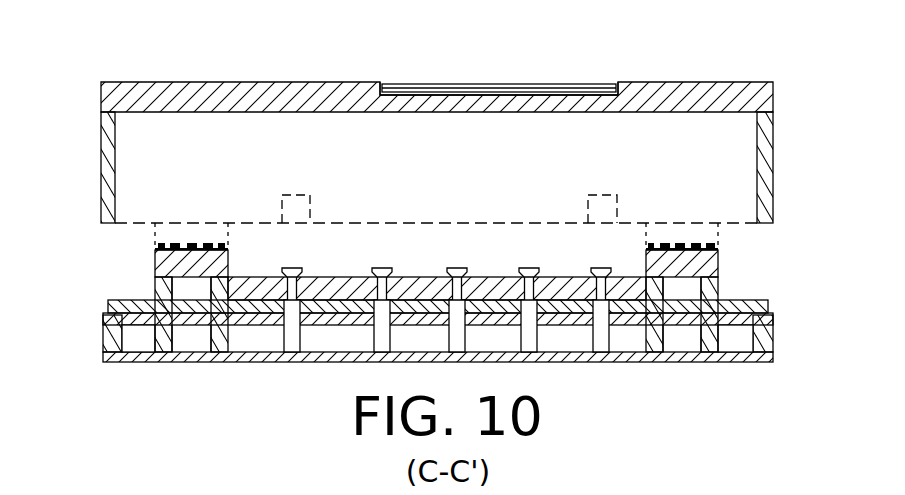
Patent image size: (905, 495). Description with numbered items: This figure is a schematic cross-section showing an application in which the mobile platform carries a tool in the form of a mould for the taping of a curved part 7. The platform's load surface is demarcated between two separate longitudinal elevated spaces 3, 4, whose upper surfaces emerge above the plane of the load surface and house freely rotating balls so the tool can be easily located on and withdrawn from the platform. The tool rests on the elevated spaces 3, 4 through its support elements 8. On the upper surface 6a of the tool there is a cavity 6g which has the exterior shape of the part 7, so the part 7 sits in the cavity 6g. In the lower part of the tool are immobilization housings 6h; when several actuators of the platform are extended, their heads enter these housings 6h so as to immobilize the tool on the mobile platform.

The elevated space 3 is at (155, 262).
The elevated space 4 is at (718, 262).
The upper surface 6a is at (247, 82).
The cavity 6g is at (550, 95).
The immobilization housing 6h is at (282, 195).
The curved part 7 is at (497, 84).
The support element 8 is at (170, 234).